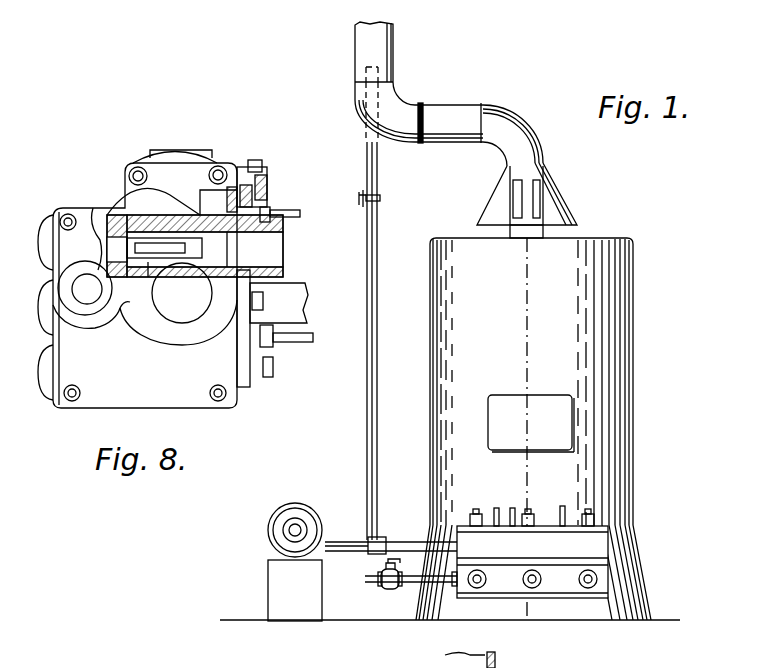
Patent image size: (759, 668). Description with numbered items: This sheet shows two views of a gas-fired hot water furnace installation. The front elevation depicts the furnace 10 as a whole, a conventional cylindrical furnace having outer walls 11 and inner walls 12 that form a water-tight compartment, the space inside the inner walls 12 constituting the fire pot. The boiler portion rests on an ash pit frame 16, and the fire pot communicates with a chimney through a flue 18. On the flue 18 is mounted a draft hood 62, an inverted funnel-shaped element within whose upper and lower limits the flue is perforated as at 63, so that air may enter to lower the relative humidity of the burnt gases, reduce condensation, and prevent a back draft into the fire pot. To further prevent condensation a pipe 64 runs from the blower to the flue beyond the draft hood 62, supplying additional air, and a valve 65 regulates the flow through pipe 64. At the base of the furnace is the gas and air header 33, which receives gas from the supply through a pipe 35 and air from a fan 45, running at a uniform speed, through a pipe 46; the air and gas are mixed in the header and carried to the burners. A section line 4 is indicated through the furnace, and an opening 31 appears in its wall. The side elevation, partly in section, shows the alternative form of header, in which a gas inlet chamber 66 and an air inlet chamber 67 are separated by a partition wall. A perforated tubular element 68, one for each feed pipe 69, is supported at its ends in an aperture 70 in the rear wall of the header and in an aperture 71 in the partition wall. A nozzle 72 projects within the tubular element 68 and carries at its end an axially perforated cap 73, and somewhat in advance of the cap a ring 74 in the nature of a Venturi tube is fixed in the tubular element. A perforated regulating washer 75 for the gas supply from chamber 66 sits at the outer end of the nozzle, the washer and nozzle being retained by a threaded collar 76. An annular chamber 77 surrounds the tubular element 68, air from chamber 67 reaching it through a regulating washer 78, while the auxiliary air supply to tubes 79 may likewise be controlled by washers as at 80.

In FIG. 1, the furnace 10 is at (637, 386).
In FIG. 1, the outer walls 11 is at (528, 290).
In FIG. 1, the ash pit frame 16 is at (645, 560).
In FIG. 1, the flue 18 is at (507, 110).
In FIG. 1, the window opening 31 is at (521, 401).
In FIG. 1, the gas and air header 33 is at (532, 552).
In FIG. 1, the section line 4 is at (541, 642).
In FIG. 1, the pipe 35 is at (410, 590).
In FIG. 1, the fan 45 is at (308, 508).
In FIG. 1, the pipe 46 is at (395, 540).
In FIG. 1, the draft hood 62 is at (562, 188).
In FIG. 1, the perforations 63 is at (512, 188).
In FIG. 1, the pipe 64 is at (366, 244).
In FIG. 1, the valve 65 is at (380, 197).
In FIG. 8, the gas inlet chamber 66 is at (94, 210).
In FIG. 8, the air inlet chamber 67 is at (221, 168).
In FIG. 8, the perforated tubular element 68 is at (138, 167).
In FIG. 8, the feed pipe 69 is at (300, 268).
In FIG. 8, the aperture 70 is at (224, 322).
In FIG. 8, the aperture 71 is at (124, 310).
In FIG. 8, the nozzle 72 is at (150, 277).
In FIG. 8, the axially perforated cap 73 is at (195, 270).
In FIG. 8, the ring 74 is at (232, 251).
In FIG. 8, the perforated regulating washer 75 is at (118, 215).
In FIG. 8, the threaded collar 76 is at (106, 283).
In FIG. 8, the annular chamber 77 is at (195, 190).
In FIG. 8, the regulating washer 78 is at (175, 150).
In FIG. 8, the tubes 79 is at (292, 210).
In FIG. 8, the washers 80 is at (250, 180).
In FIG. 1, the inner walls 12 is at (470, 660).